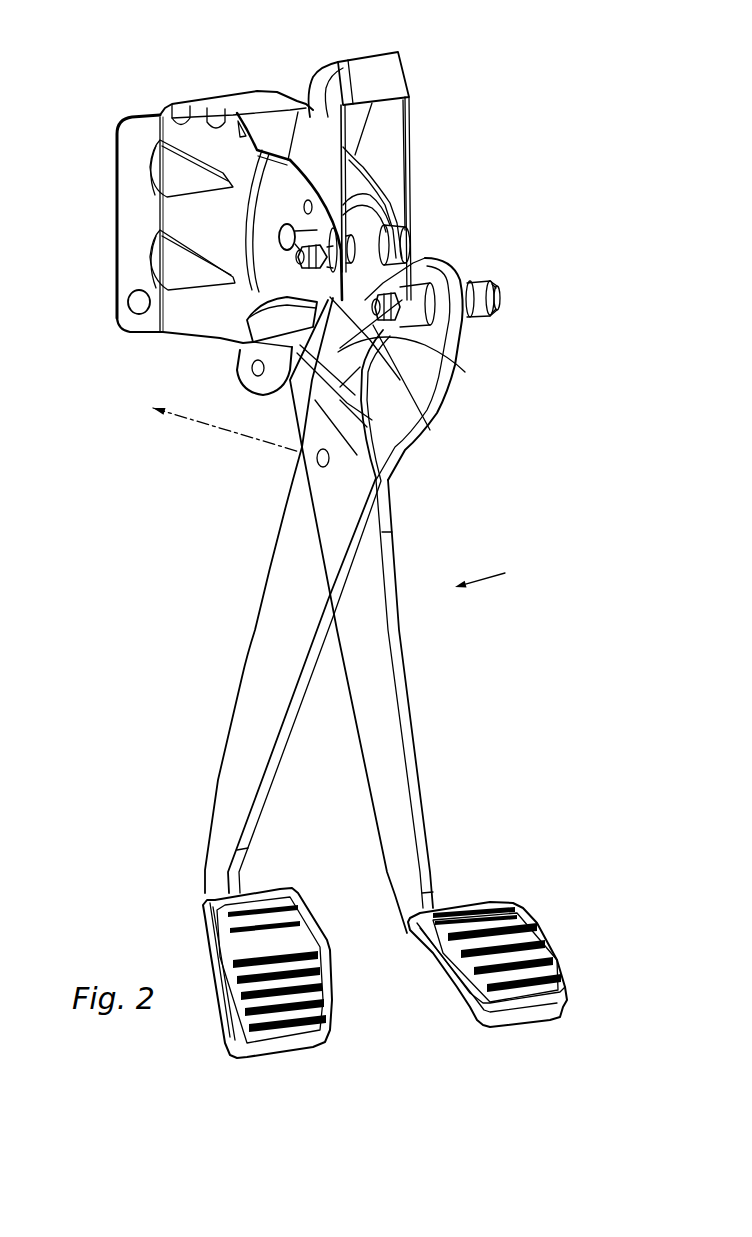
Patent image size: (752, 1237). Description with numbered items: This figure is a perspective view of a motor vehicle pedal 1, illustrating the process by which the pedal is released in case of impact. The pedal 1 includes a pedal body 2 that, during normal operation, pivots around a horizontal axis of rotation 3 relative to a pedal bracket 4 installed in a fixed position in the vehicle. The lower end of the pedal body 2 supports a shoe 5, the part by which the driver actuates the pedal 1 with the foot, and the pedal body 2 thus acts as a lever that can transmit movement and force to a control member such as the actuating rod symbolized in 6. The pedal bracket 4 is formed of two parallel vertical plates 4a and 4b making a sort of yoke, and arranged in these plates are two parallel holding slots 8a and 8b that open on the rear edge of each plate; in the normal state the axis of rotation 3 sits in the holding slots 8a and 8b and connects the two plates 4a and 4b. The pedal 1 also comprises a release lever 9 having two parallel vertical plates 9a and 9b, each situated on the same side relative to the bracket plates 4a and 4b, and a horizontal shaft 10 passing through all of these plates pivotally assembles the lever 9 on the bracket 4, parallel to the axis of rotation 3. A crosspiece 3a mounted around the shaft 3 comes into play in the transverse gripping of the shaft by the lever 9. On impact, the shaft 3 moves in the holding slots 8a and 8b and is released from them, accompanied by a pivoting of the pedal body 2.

The motor vehicle pedal 1 is at (486, 575).
The pedal body 2 is at (277, 665).
The axis of rotation 3 is at (510, 289).
The crosspiece 3a is at (473, 317).
The pedal bracket 4 is at (143, 106).
The vertical plate 4a is at (265, 181).
The vertical plate 4b is at (353, 173).
The shoe 5 is at (313, 987).
The actuating rod 6 is at (205, 424).
The holding slot 8a is at (464, 370).
The holding slot 8b is at (434, 234).
The release lever 9 is at (424, 66).
The vertical plate 9a is at (310, 117).
The vertical plate 9b is at (387, 123).
The horizontal shaft 10 is at (279, 237).